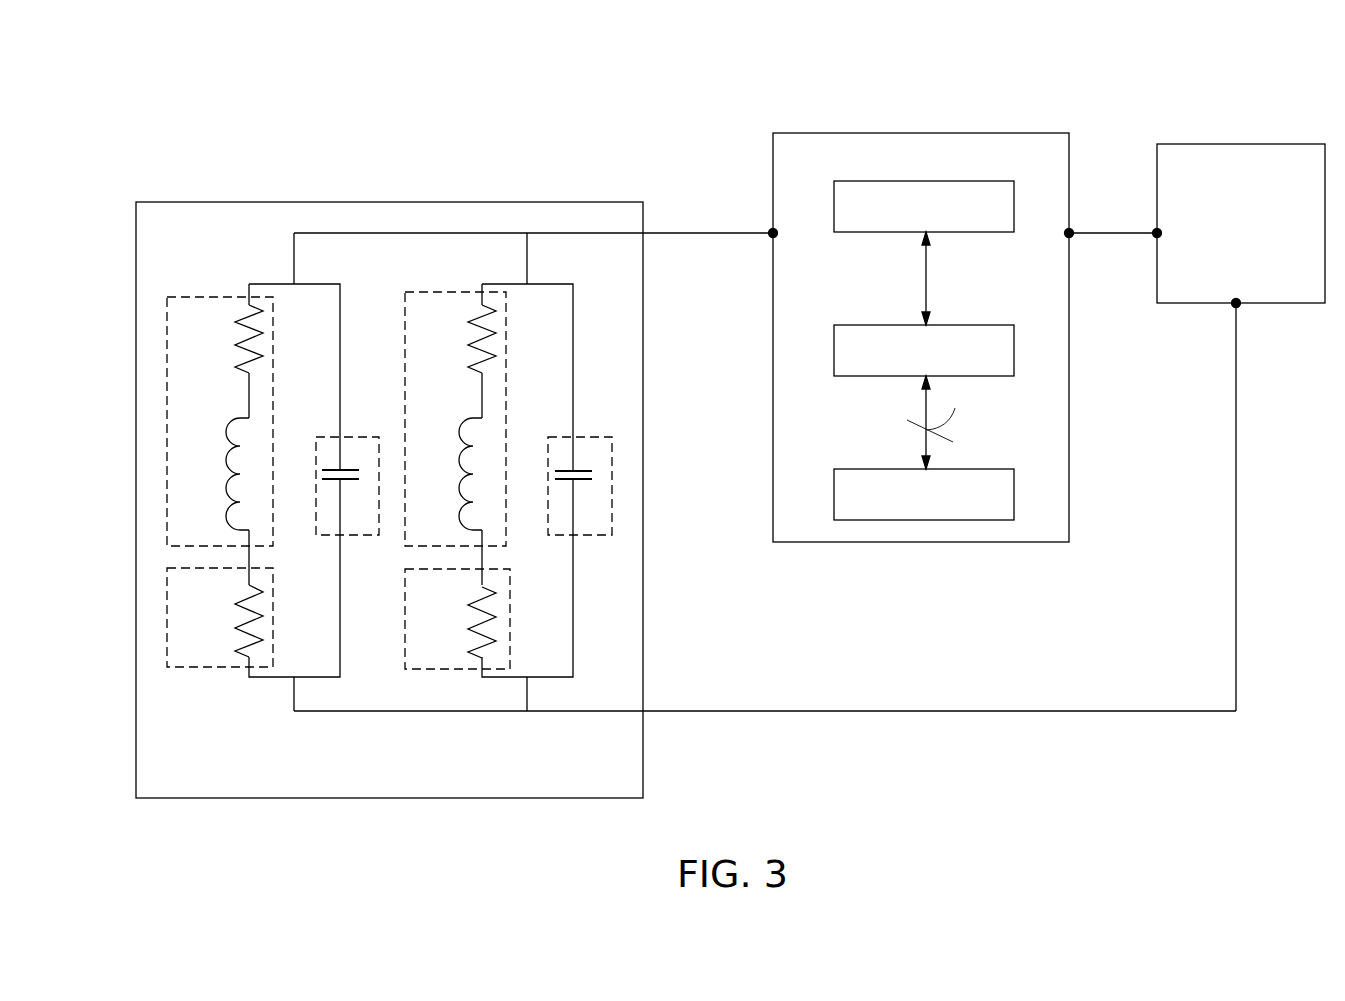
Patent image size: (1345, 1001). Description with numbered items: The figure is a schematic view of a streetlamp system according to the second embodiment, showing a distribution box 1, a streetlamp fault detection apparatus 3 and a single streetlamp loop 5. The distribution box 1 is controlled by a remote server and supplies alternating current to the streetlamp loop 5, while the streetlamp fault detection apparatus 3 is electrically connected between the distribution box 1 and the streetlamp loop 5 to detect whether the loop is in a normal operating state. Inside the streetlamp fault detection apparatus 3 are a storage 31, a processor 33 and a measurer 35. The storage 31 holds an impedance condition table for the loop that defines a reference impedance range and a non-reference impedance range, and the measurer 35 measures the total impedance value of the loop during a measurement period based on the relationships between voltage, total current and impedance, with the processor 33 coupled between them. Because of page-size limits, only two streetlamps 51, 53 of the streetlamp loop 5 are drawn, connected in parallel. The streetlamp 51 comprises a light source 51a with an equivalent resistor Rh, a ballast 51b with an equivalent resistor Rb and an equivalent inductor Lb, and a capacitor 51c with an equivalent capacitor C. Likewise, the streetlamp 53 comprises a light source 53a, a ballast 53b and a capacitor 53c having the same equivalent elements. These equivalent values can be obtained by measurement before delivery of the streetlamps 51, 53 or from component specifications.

The distribution box 1 is at (1222, 144).
The streetlamp fault detection apparatus 3 is at (923, 304).
The streetlamp loop 5 is at (475, 202).
The storage 31 is at (972, 216).
The processor 33 is at (982, 363).
The measurer 35 is at (981, 508).
The streetlamp 51 is at (284, 516).
The light source 51a is at (188, 667).
The ballast 51b is at (176, 297).
The capacitor 51c is at (346, 437).
The streetlamp 53 is at (521, 516).
The light source 53a is at (440, 669).
The ballast 53b is at (415, 292).
The capacitor 53c is at (580, 437).